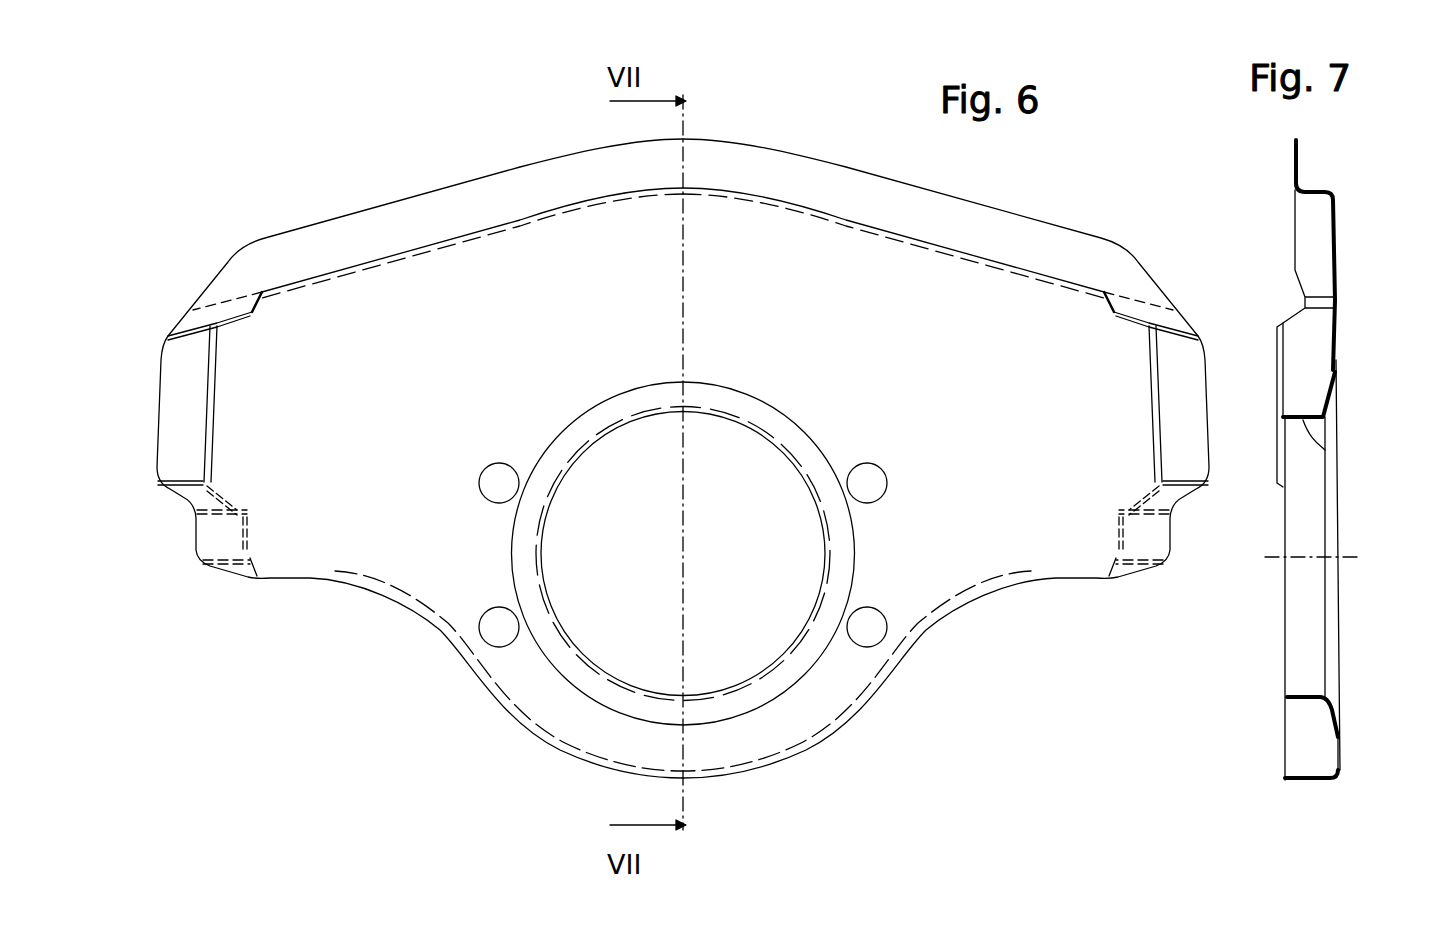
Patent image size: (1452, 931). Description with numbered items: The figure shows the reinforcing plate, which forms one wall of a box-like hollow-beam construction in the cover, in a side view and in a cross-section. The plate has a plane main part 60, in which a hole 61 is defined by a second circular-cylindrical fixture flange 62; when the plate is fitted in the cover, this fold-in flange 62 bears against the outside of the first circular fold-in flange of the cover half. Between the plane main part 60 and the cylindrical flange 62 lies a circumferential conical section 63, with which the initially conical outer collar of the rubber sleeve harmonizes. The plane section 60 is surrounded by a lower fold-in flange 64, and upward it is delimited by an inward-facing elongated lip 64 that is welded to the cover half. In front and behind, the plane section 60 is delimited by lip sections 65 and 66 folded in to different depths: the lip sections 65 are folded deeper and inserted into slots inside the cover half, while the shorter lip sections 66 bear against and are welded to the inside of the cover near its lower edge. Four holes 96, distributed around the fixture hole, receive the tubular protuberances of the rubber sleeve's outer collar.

In FIG. 6, the plane main part 60 is at (841, 333).
In FIG. 6, the hole 61 is at (782, 549).
In FIG. 7, the hole 61 is at (1307, 507).
In FIG. 6, the second circular-cylindrical fixture flange 62 is at (807, 490).
In FIG. 7, the second circular-cylindrical fixture flange 62 is at (1325, 447).
In FIG. 6, the circumferential conical section 63 is at (797, 437).
In FIG. 7, the circumferential conical section 63 is at (1333, 398).
In FIG. 6, the lower fold-in flange 64 is at (830, 188).
In FIG. 7, the lower fold-in flange 64 is at (1296, 168).
In FIG. 6, the lip sections 65 is at (170, 423).
In FIG. 7, the lip sections 65 is at (1280, 405).
In FIG. 6, the shorter lip sections 66 is at (210, 535).
In FIG. 6, the holes 96 is at (877, 630).